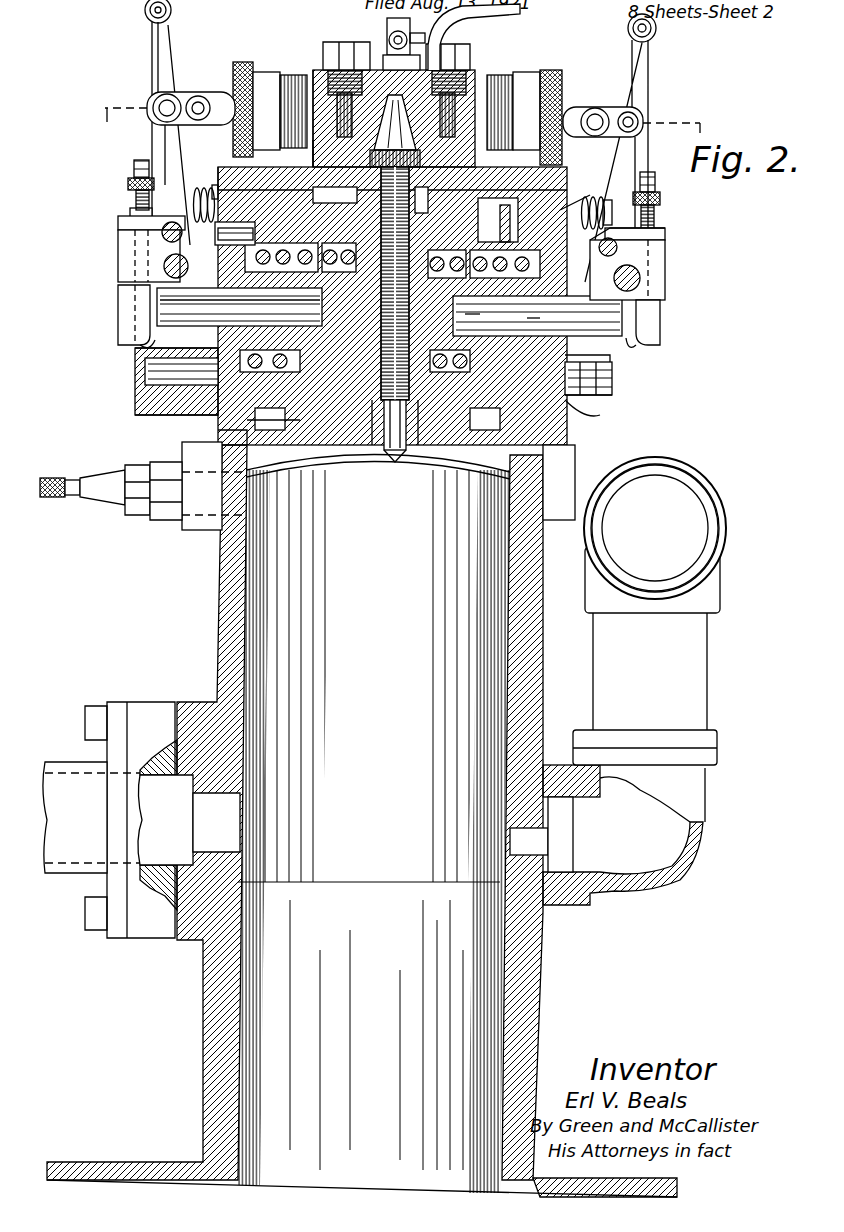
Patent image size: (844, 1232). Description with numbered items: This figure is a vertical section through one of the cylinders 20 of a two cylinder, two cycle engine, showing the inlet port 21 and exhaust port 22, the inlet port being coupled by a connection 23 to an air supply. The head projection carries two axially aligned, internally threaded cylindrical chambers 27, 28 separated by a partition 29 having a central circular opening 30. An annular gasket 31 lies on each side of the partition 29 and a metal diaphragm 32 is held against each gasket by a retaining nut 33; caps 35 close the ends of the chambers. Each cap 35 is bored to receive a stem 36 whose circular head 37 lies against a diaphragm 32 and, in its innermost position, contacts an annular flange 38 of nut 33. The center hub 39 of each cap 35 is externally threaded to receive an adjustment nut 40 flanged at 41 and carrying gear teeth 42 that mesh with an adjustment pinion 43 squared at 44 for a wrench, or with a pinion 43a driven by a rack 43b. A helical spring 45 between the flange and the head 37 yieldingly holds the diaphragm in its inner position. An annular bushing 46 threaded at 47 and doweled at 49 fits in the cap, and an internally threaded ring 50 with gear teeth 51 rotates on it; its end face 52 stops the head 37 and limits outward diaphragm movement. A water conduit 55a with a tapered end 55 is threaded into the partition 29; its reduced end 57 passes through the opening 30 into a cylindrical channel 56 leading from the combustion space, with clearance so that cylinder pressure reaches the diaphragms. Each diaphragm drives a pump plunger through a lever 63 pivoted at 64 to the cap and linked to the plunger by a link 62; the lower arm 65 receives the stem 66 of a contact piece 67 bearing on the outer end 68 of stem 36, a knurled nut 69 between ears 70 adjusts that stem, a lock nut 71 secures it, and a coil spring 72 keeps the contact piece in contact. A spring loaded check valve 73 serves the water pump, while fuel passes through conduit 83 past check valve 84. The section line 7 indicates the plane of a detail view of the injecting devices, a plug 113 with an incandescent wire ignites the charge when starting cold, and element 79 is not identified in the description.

The cylinder 20 is at (220, 617).
The inlet port 21 is at (537, 840).
The exhaust port 22 is at (141, 820).
The connection 23 is at (683, 676).
The cylindrical chamber 27 is at (205, 164).
The cylindrical chamber 28 is at (565, 120).
The partition 29 is at (320, 110).
The central circular opening 30 is at (277, 390).
The annular gasket 31 is at (365, 455).
The metal diaphragm 32 is at (273, 392).
The retaining nut 33 is at (300, 153).
The cap 35 is at (290, 210).
The stem 36 is at (389, 312).
The circular head 37 is at (476, 307).
The annular flange 38 is at (410, 435).
The center hub 39 is at (100, 278).
The adjustment nut 40 is at (605, 370).
The flange 41 is at (140, 383).
The gear teeth 42 is at (650, 244).
The adjustment pinion 43 is at (592, 420).
The pinion 43a is at (163, 366).
The rack 43b is at (148, 412).
The squared stem end 44 is at (618, 396).
The helical spring 45 is at (165, 240).
The annular bushing 46 is at (592, 195).
The external thread 47 is at (635, 175).
The dowel 49 is at (223, 233).
The internally threaded ring 50 is at (351, 362).
The gear teeth 51 is at (225, 445).
The end face 52 is at (560, 428).
The tapered end 55 is at (435, 115).
The water conduit 55a is at (556, 105).
The cylindrical channel 56 is at (390, 448).
The reduced end 57 is at (380, 455).
The link 62 is at (216, 102).
The lever 63 is at (152, 56).
The pivot 64 is at (140, 229).
The lower arm 65 is at (160, 300).
The stem 66 is at (150, 264).
The contact piece 67 is at (130, 342).
The outer end 68 is at (150, 312).
The knurled nut 69 is at (135, 180).
The ears 70 is at (673, 186).
The lock nut 71 is at (133, 218).
The coil spring 72 is at (401, 200).
The spring loaded check valve 73 is at (333, 140).
The valve knob 79 is at (392, 40).
The conduit 83 is at (505, 10).
The check valve 84 is at (418, 160).
The plug 113 is at (135, 505).
The section line 7 is at (400, 129).